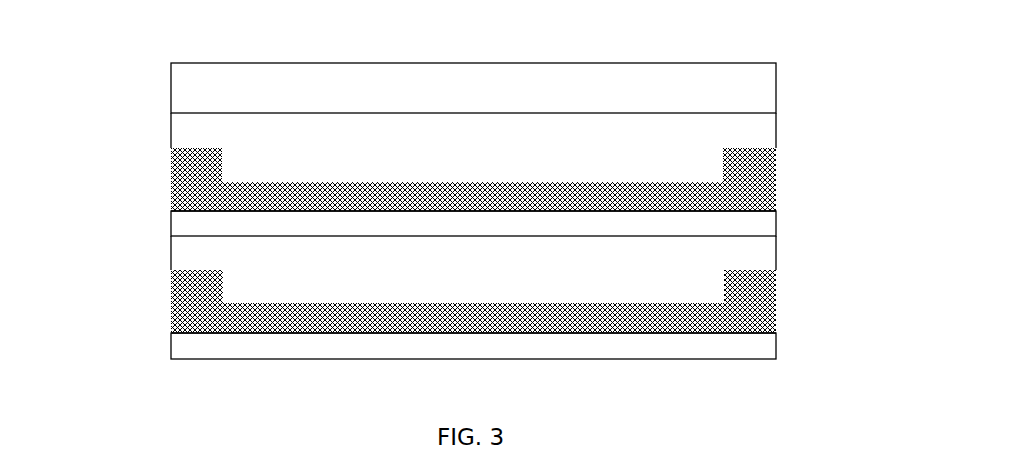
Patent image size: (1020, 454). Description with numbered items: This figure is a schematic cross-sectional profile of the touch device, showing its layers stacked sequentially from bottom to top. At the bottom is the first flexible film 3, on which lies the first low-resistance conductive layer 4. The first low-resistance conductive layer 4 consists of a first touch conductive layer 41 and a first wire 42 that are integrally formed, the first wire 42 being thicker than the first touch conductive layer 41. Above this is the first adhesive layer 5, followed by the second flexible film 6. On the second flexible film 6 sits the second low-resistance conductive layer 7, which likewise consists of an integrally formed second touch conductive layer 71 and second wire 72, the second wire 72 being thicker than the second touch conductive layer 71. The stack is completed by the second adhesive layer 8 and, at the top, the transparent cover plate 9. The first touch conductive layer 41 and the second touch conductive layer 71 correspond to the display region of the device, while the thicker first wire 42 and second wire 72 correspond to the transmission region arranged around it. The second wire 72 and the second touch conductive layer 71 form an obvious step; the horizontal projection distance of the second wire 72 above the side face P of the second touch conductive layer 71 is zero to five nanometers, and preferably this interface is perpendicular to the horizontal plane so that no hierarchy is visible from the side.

The first flexible film 3 is at (760, 352).
The first low-resistance conductive layer 4 is at (399, 283).
The first touch conductive layer 41 is at (347, 325).
The first wire 42 is at (205, 317).
The first adhesive layer 5 is at (757, 262).
The second flexible film 6 is at (753, 228).
The second low-resistance conductive layer 7 is at (397, 159).
The second touch conductive layer 71 is at (333, 197).
The second wire 72 is at (205, 197).
The second adhesive layer 8 is at (755, 132).
The transparent cover plate 9 is at (760, 92).
The side face P is at (722, 282).